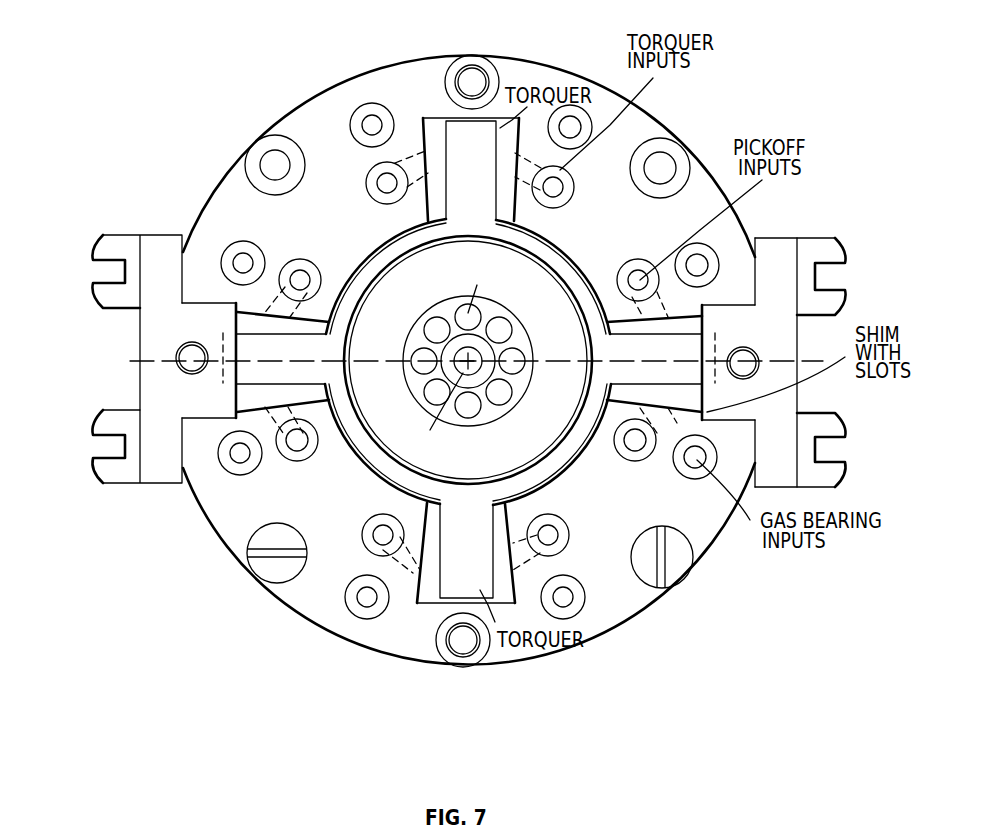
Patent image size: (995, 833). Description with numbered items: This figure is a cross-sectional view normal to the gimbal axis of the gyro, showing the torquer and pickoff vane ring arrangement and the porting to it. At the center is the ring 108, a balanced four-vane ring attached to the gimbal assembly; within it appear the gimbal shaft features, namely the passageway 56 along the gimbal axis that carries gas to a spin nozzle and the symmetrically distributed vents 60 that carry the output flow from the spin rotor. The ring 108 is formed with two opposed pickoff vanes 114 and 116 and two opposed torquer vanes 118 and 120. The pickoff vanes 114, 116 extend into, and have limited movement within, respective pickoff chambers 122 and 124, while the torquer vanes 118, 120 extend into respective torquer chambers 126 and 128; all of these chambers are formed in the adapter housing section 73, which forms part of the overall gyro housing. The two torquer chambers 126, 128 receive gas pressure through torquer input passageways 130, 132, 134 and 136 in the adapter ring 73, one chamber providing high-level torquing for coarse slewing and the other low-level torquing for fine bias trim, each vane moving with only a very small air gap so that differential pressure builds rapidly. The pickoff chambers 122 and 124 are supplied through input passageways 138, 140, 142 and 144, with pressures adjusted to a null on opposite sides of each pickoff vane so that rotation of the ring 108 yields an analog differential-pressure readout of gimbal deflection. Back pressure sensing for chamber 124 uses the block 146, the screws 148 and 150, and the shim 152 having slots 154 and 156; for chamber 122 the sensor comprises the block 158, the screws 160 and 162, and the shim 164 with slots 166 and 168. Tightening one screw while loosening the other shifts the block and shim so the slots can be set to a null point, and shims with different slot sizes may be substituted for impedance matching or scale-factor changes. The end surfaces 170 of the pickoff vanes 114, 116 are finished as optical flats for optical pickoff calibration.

The adapter housing section 73 is at (513, 72).
The ring 108 is at (560, 265).
The passageway 56 is at (482, 357).
The vents 60 is at (498, 393).
The pickoff vane 114 is at (300, 360).
The pickoff vane 116 is at (650, 362).
The torquer vane 118 is at (480, 160).
The torquer vane 120 is at (476, 539).
The pickoff chamber 122 is at (283, 362).
The pickoff chamber 124 is at (678, 339).
The torquer chamber 126 is at (432, 127).
The torquer chamber 128 is at (432, 547).
The torquer input passageway 130 is at (383, 185).
The torquer input passageway 132 is at (562, 187).
The torquer input passageway 134 is at (383, 535).
The torquer input passageway 136 is at (547, 535).
The input passageway 138 is at (295, 450).
The input passageway 140 is at (307, 275).
The input passageway 142 is at (640, 445).
The input passageway 144 is at (642, 278).
The block 146 is at (790, 317).
The screw 148 is at (840, 250).
The screw 150 is at (825, 423).
The shim 152 is at (728, 273).
The slot 154 is at (707, 323).
The slot 156 is at (718, 382).
The block 158 is at (223, 335).
The screw 160 is at (110, 242).
The screw 162 is at (110, 420).
The shim 164 is at (237, 410).
The slot 166 is at (233, 392).
The slot 168 is at (176, 353).
The end surfaces 170 is at (218, 368).